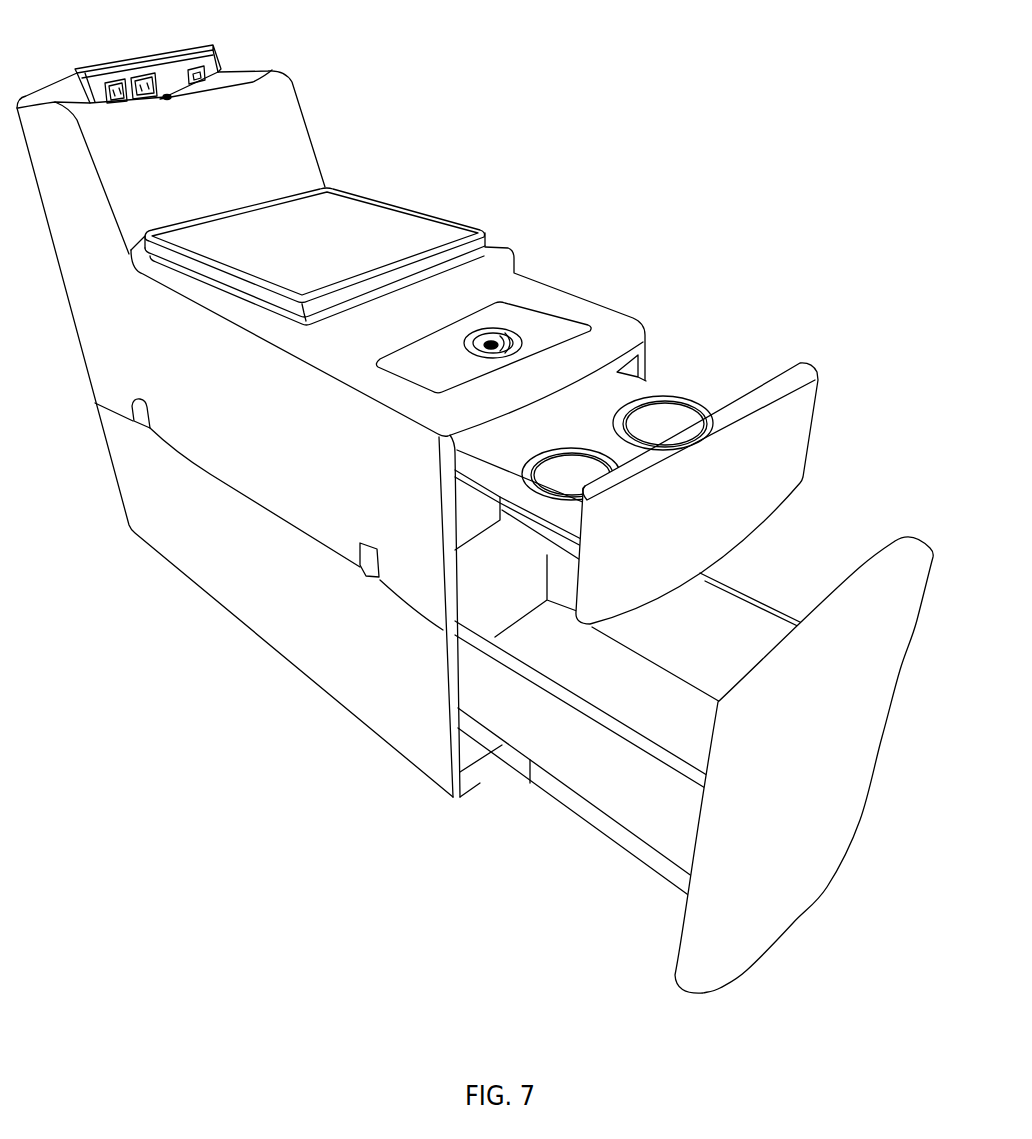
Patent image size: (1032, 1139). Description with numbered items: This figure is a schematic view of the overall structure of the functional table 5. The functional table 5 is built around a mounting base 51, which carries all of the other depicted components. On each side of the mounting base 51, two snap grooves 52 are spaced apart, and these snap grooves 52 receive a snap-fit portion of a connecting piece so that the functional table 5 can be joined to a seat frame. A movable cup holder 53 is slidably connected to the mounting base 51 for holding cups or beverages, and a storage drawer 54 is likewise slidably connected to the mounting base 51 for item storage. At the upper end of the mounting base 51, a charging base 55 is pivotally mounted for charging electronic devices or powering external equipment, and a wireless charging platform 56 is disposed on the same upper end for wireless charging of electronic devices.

The functional table 5 is at (308, 129).
The mounting base 51 is at (258, 607).
The snap groove 52 is at (370, 558).
The movable cup holder 53 is at (647, 392).
The storage drawer 54 is at (620, 798).
The charging base 55 is at (163, 78).
The wireless charging platform 56 is at (548, 325).